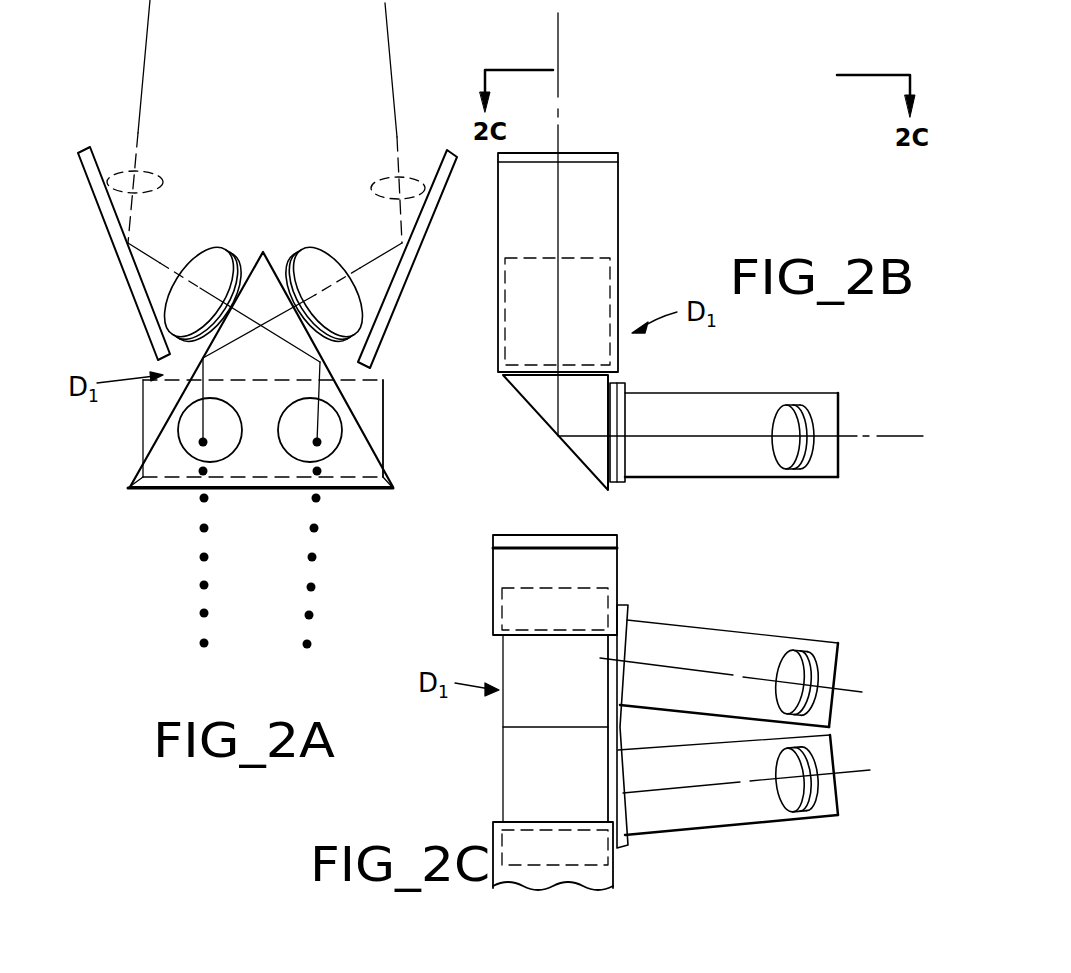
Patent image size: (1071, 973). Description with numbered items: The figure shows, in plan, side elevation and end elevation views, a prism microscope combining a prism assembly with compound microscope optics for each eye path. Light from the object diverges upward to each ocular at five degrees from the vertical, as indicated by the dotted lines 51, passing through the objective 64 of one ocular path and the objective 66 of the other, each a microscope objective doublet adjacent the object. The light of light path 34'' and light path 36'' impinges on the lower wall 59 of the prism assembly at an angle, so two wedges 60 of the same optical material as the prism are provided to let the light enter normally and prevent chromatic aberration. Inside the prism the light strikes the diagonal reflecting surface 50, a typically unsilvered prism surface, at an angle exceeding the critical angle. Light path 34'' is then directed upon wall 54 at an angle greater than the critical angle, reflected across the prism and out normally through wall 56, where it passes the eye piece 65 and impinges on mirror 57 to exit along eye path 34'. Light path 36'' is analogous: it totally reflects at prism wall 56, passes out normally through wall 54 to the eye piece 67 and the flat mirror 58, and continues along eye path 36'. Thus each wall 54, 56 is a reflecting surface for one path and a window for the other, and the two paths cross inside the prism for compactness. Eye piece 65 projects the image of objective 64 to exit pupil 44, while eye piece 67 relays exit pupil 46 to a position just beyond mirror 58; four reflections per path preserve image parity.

In FIG. 2A, the eye path 34' is at (302, 180).
In FIG. 2B, the eye path 34' is at (595, 224).
In FIG. 2A, the eye path 36' is at (224, 181).
In FIG. 2A, the exit pupil 44 is at (377, 182).
In FIG. 2A, the exit pupil 46 is at (158, 175).
In FIG. 2B, the diagonal reflecting surface 50 is at (580, 463).
In FIG. 2A, the dotted lines 51 is at (207, 559).
In FIG. 2A, the prism wall 54 is at (167, 346).
In FIG. 2A, the prism wall 56 is at (383, 382).
In FIG. 2A, the mirror 57 is at (428, 235).
In FIG. 2A, the flat mirror 58 is at (103, 228).
In FIG. 2B, the lower wall 59 is at (610, 405).
In FIG. 2B, the wedges 60 is at (618, 482).
In FIG. 2C, the wedges 60 is at (625, 845).
In FIG. 2A, the objective 64 is at (188, 457).
In FIG. 2C, the objective 64 is at (790, 648).
In FIG. 2A, the eye piece 65 is at (327, 245).
In FIG. 2A, the objective 66 is at (340, 462).
In FIG. 2B, the objective 66 is at (803, 408).
In FIG. 2C, the objective 66 is at (790, 817).
In FIG. 2A, the eye piece 67 is at (205, 247).
In FIG. 2A, the light path 34'' is at (133, 411).
In FIG. 2C, the light path 34'' is at (755, 673).
In FIG. 2A, the light path 36'' is at (392, 402).
In FIG. 2B, the light path 36'' is at (752, 431).
In FIG. 2C, the light path 36'' is at (777, 785).